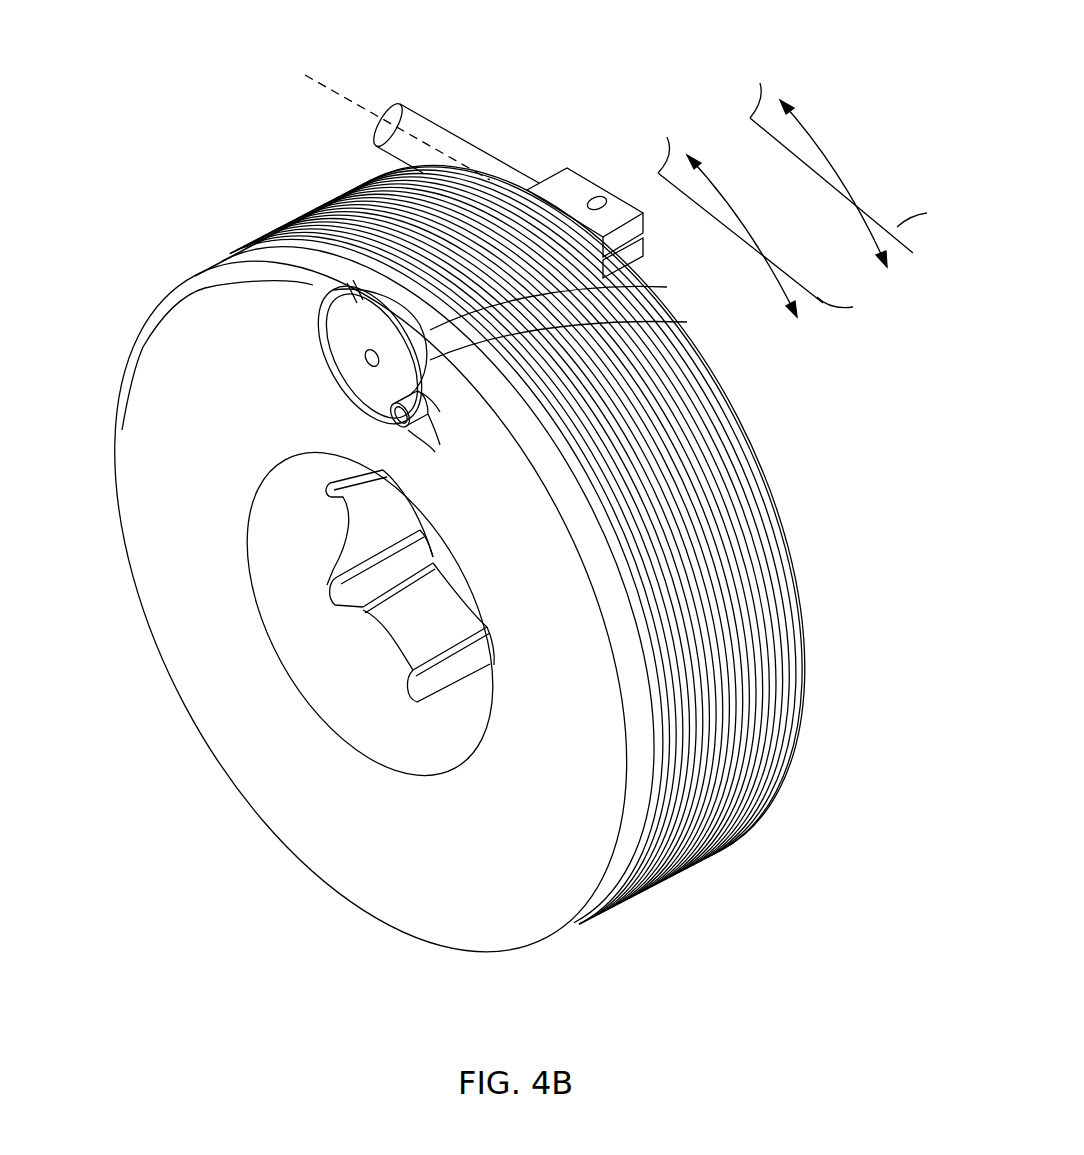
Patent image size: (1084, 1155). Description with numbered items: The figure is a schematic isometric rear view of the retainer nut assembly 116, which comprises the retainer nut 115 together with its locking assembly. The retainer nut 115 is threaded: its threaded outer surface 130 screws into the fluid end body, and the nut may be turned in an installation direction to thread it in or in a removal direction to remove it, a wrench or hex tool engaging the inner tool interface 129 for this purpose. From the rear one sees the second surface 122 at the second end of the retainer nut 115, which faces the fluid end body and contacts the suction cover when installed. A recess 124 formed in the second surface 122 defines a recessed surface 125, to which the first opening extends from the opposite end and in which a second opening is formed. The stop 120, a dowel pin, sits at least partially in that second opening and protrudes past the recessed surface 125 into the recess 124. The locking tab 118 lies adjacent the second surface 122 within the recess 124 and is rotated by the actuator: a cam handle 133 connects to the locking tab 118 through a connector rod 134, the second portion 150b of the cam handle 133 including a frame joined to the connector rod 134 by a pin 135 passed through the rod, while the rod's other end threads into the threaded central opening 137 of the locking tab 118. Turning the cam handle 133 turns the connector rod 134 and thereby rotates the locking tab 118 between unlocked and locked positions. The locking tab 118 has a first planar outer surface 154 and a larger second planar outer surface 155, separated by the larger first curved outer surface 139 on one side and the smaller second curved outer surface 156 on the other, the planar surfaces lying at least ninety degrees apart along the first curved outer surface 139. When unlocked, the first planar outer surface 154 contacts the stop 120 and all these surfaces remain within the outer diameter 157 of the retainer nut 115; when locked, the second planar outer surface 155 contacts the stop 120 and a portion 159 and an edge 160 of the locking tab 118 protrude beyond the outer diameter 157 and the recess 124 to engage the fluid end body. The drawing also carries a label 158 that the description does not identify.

The retainer nut 115 is at (372, 908).
The retainer nut assembly 116 is at (215, 130).
The locking tab 118 is at (325, 330).
The stop 120 is at (440, 445).
The second surface 122 is at (160, 550).
The recess 124 is at (425, 398).
The recessed surface 125 is at (667, 287).
The inner tool interface 129 is at (385, 625).
The threaded outer surface 130 is at (760, 585).
The cam handle 133 is at (445, 130).
The connector rod 134 is at (365, 360).
The pin 135 is at (597, 197).
The central opening 137 is at (345, 378).
The first curved outer surface 139 is at (318, 347).
The second portion 150b is at (627, 208).
The first planar outer surface 154 is at (385, 420).
The second planar outer surface 155 is at (290, 253).
The second curved outer surface 156 is at (687, 322).
The outer diameter 157 is at (355, 305).
The pin axis 158 is at (333, 90).
The portion 159 is at (402, 432).
The edge 160 is at (420, 435).